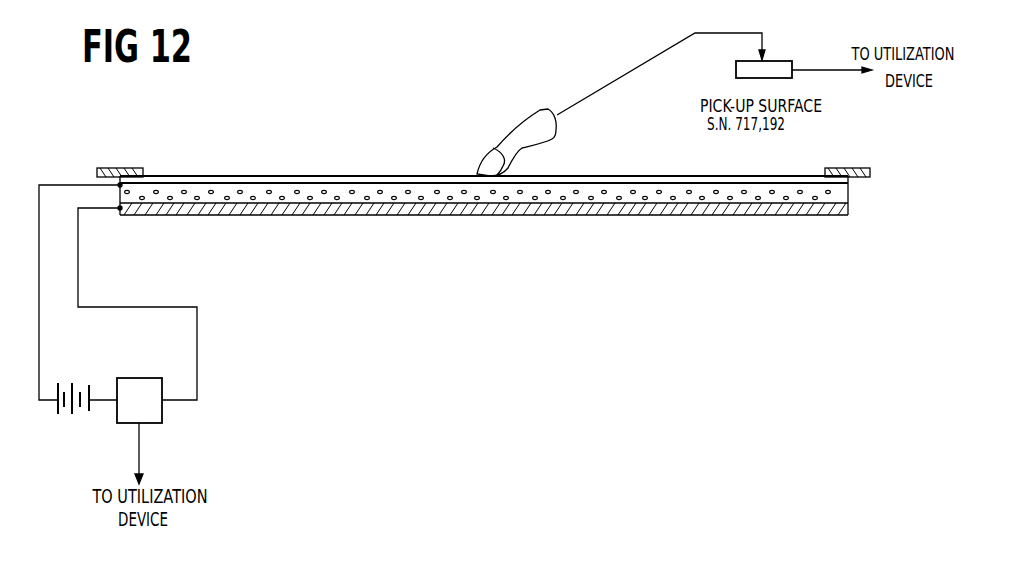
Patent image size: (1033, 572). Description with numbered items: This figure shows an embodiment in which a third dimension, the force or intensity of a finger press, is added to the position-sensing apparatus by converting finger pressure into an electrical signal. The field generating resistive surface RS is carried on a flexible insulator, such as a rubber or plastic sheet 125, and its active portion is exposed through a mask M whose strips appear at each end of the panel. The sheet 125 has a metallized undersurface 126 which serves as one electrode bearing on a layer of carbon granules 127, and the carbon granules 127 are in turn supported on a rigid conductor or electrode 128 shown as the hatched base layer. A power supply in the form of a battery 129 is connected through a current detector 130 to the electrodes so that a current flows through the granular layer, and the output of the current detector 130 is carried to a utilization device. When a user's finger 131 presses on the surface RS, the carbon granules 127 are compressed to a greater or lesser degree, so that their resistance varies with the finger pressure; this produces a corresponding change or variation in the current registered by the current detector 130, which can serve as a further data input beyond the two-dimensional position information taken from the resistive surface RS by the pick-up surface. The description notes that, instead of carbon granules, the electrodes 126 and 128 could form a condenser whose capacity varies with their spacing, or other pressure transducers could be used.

The flexible insulator sheet 125 is at (240, 177).
The metallized undersurface 126 is at (484, 224).
The carbon granules 127 is at (313, 194).
The rigid conductor 128 is at (388, 201).
The battery 129 is at (89, 396).
The current detector 130 is at (132, 378).
The user's finger 131 is at (510, 146).
The mask M is at (122, 168).
The field generating resistive surface RS is at (484, 196).